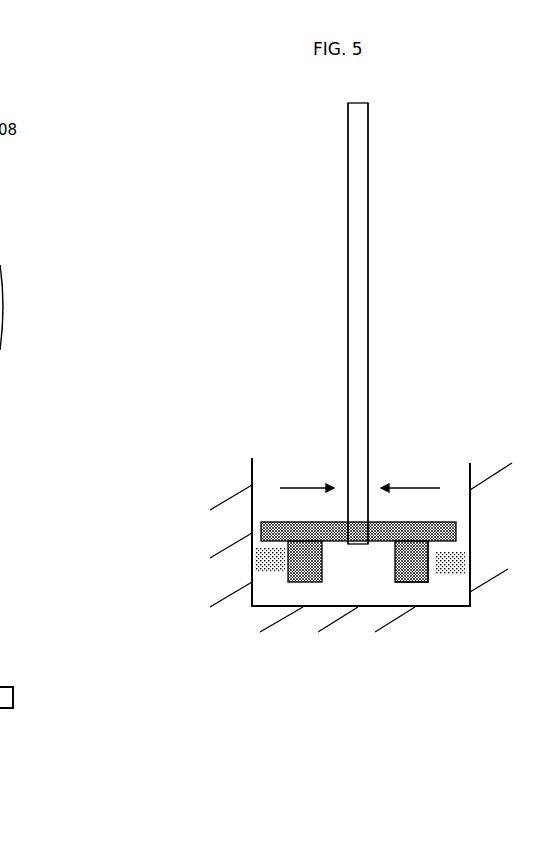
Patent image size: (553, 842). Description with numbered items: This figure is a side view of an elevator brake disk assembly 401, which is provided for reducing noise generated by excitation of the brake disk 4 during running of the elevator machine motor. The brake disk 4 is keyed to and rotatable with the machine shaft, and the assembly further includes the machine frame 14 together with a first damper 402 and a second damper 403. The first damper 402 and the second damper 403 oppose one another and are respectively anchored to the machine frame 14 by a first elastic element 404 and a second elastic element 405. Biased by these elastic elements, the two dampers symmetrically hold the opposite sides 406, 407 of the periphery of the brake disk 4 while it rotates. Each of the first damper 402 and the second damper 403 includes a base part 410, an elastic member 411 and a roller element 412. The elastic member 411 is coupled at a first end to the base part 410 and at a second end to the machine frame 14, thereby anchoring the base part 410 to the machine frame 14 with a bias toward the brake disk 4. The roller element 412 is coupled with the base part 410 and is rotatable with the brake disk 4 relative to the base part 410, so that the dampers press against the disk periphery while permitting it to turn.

The brake disk 4 is at (356, 160).
The machine frame 14 is at (468, 470).
The elevator brake disk assembly 401 is at (313, 595).
The first damper 402 is at (288, 582).
The second damper 403 is at (430, 580).
The first elastic element 404 is at (258, 563).
The second elastic element 405 is at (455, 566).
The side of the periphery 406 is at (347, 408).
The side of the periphery 407 is at (368, 373).
The base part 410 is at (412, 570).
The elastic member 411 is at (456, 565).
The roller element 412 is at (445, 530).